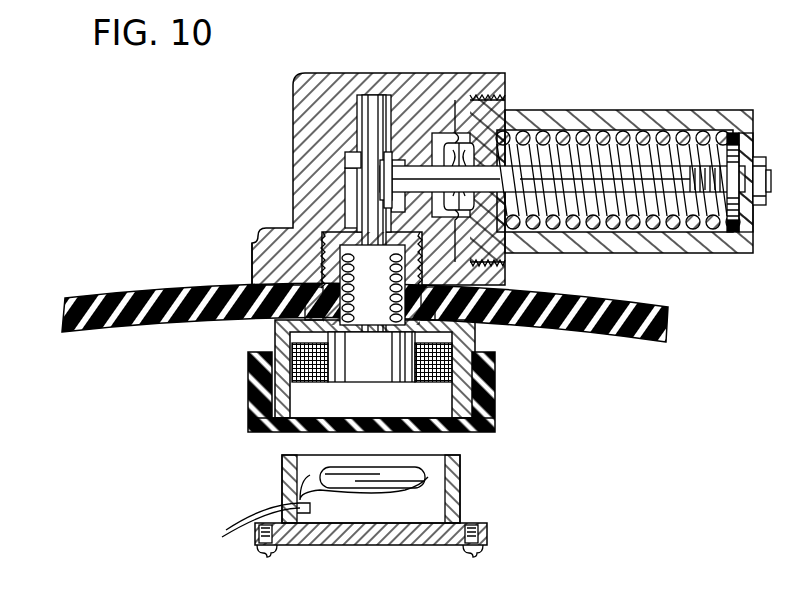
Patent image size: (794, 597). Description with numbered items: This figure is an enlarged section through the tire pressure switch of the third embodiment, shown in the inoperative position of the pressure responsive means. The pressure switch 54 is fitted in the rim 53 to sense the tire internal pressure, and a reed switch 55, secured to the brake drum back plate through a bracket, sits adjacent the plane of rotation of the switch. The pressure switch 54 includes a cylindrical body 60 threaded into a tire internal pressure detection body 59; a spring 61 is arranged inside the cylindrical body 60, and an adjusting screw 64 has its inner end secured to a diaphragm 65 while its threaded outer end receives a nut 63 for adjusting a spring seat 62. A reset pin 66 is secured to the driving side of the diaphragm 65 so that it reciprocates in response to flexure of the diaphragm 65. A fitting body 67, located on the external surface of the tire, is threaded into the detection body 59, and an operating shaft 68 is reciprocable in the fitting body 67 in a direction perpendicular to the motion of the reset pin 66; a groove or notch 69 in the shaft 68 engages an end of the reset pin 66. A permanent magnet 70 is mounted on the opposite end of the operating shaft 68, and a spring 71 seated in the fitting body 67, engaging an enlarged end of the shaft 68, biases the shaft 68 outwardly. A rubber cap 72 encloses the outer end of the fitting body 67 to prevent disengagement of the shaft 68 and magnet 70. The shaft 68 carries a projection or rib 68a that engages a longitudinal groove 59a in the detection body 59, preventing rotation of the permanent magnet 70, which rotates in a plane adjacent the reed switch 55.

The rim 53 is at (139, 297).
The pressure switch 54 is at (252, 240).
The reed switch 55 is at (447, 483).
The tire internal pressure detection body 59 is at (458, 73).
The longitudinal groove 59a is at (345, 204).
The cylindrical body 60 is at (648, 116).
The spring 61 is at (670, 227).
The spring seat 62 is at (738, 230).
The nut 63 is at (755, 163).
The adjusting screw 64 is at (555, 174).
The diaphragm 65 is at (478, 95).
The reset pin 66 is at (397, 164).
The fitting body 67 is at (275, 332).
The operating shaft 68 is at (363, 128).
The projection or rib 68a is at (345, 158).
The groove or notch 69 is at (390, 202).
The permanent magnet 70 is at (371, 387).
The spring 71 is at (342, 336).
The rubber cap 72 is at (274, 432).